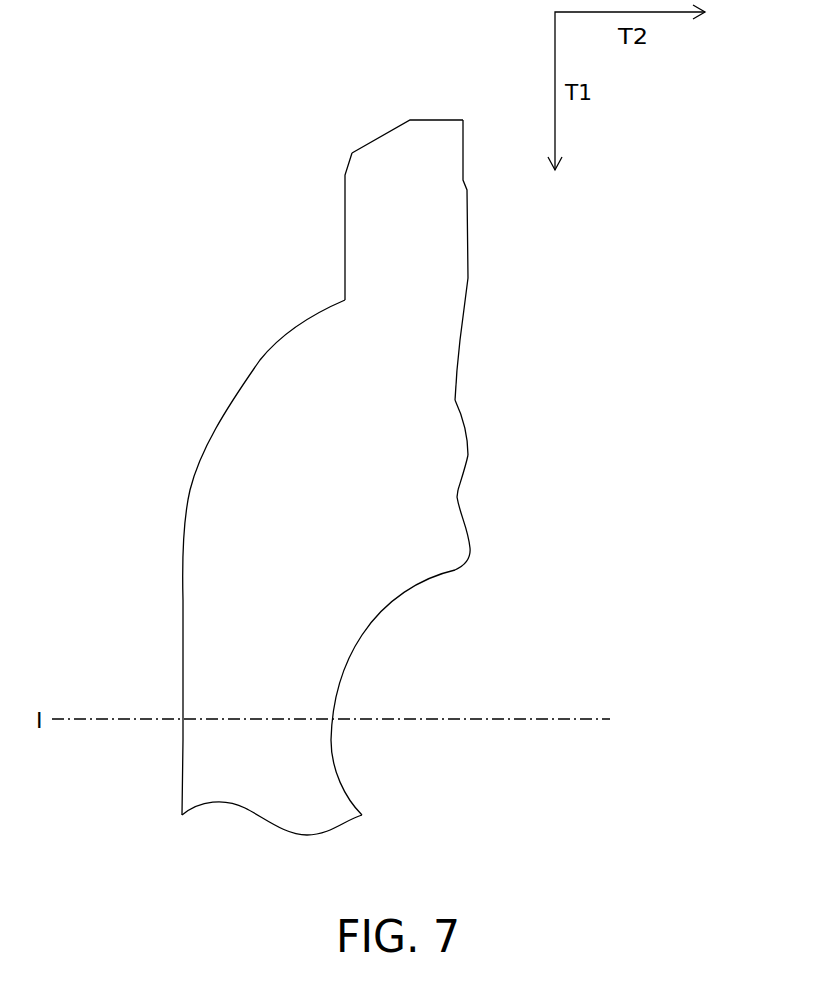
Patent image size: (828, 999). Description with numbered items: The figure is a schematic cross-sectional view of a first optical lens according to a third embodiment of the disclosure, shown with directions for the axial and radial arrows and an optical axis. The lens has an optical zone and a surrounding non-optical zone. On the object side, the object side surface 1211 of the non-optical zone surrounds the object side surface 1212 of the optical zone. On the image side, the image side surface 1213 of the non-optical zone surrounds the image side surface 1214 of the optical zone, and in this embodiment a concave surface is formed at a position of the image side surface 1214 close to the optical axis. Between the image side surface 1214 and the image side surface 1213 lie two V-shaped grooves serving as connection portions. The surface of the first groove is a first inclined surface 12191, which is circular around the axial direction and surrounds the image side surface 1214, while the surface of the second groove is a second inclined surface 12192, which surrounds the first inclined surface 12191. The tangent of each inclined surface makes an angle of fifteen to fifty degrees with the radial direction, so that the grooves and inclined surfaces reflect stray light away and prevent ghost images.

The object side surface of the non-optical zone 1211 is at (343, 222).
The object side surface of the optical zone 1212 is at (181, 540).
The image side surface of the non-optical zone 1213 is at (470, 232).
The image side surface of the optical zone 1214 is at (337, 667).
The first inclined surface 12191 is at (460, 483).
The second inclined surface 12192 is at (458, 371).